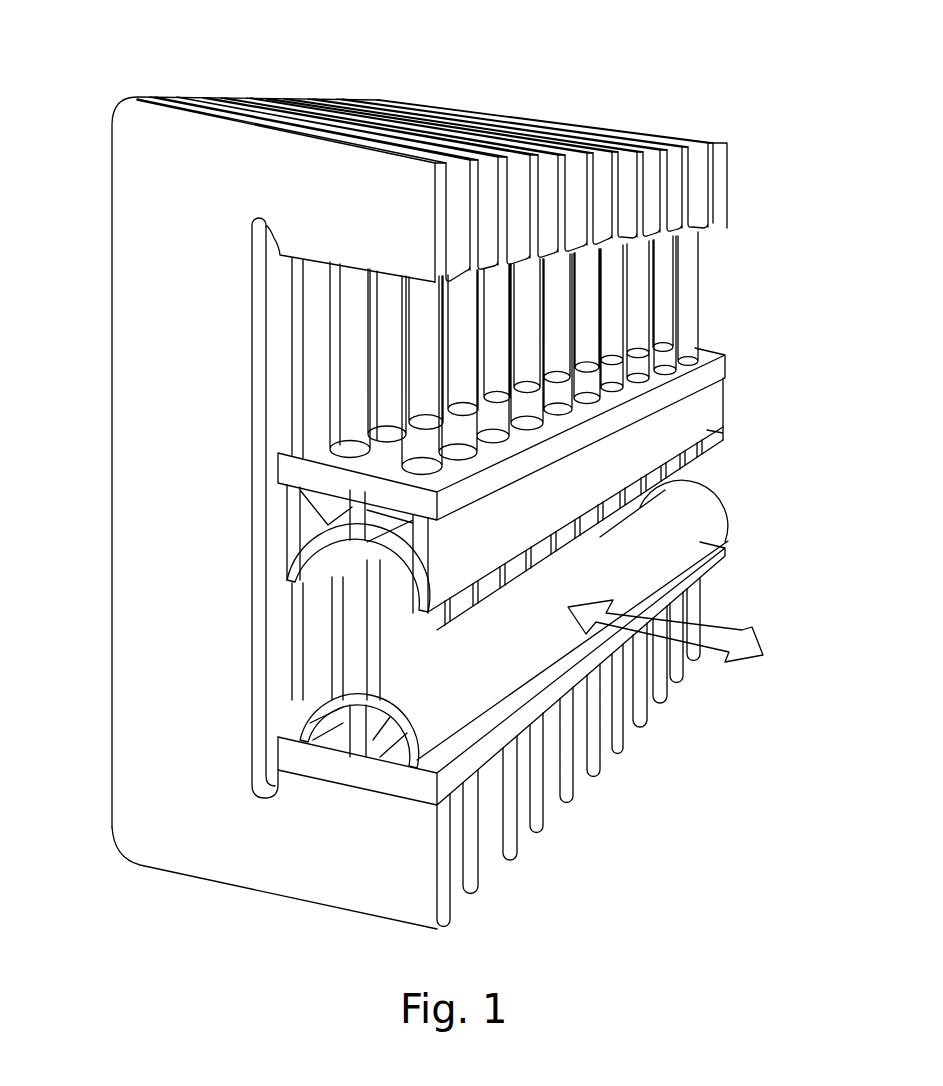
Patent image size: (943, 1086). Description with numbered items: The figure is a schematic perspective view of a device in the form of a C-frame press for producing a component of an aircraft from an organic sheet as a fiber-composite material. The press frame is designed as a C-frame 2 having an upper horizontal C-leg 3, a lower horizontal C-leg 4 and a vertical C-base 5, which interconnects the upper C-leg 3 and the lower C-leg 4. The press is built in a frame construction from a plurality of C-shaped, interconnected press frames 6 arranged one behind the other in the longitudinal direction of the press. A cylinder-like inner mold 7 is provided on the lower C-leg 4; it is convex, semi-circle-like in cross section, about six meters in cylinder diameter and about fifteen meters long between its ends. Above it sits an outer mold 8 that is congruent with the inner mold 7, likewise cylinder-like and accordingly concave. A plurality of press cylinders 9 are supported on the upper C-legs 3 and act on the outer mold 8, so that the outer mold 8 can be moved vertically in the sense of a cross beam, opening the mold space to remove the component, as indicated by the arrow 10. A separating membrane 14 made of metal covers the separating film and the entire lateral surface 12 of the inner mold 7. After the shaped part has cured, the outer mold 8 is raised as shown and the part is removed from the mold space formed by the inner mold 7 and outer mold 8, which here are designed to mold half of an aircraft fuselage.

The C-frame 2 is at (145, 275).
The upper horizontal C-leg 3 is at (256, 137).
The lower horizontal C-leg 4 is at (290, 878).
The vertical C-base 5 is at (137, 455).
The press frames 6 is at (446, 100).
The inner mold 7 is at (462, 695).
The outer mold 8 is at (708, 435).
The press cylinders 9 is at (690, 300).
The arrow 10 is at (752, 633).
The lateral surface 12 is at (505, 528).
The separating membrane 14 is at (290, 587).